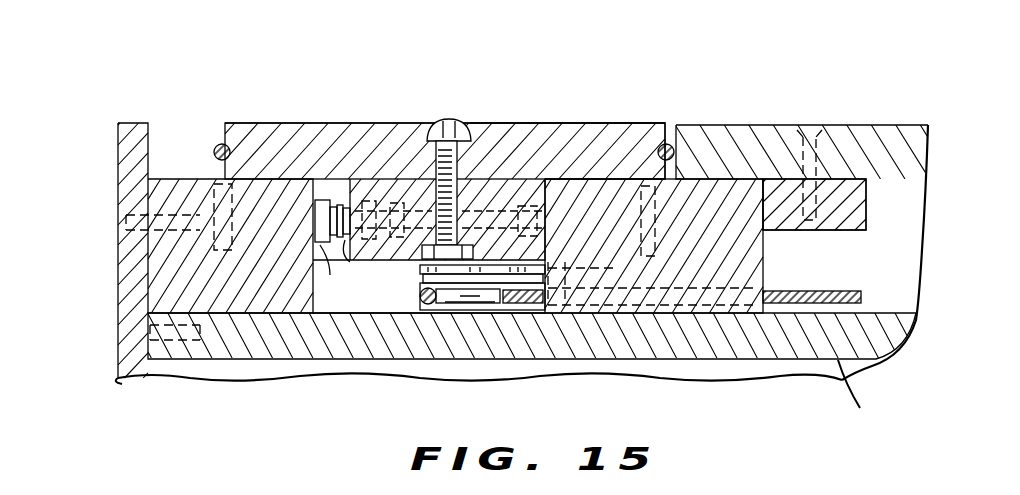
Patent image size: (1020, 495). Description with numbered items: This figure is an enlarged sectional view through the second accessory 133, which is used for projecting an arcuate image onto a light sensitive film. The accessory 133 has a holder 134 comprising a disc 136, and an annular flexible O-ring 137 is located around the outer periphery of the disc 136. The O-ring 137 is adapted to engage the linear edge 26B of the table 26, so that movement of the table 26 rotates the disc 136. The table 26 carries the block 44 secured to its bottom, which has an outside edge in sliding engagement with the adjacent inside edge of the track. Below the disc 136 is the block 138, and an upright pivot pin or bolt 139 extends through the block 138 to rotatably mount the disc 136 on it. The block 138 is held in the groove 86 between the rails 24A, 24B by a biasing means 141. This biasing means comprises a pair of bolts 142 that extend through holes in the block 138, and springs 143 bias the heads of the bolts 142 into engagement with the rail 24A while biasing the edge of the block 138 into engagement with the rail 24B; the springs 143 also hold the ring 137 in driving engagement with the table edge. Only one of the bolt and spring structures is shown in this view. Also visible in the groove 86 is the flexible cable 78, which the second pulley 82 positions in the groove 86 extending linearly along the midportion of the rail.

The second accessory 133 is at (255, 116).
The annular flexible O-ring 137 is at (214, 148).
The biasing means 141 is at (334, 186).
The block 138 is at (385, 185).
The upright pivot pin or bolt 139 is at (452, 119).
The disc 136 is at (505, 123).
The holder 134 is at (596, 121).
The linear edge of table 26B is at (672, 145).
The table 26 is at (875, 140).
The block 44 is at (860, 210).
The flexible cable 78 is at (845, 289).
The rail 24A is at (190, 288).
The rail 24B is at (702, 300).
The bolts 142 is at (343, 274).
The springs 143 is at (345, 262).
The second pulley 82 is at (448, 302).
The groove or channel 86 is at (388, 302).